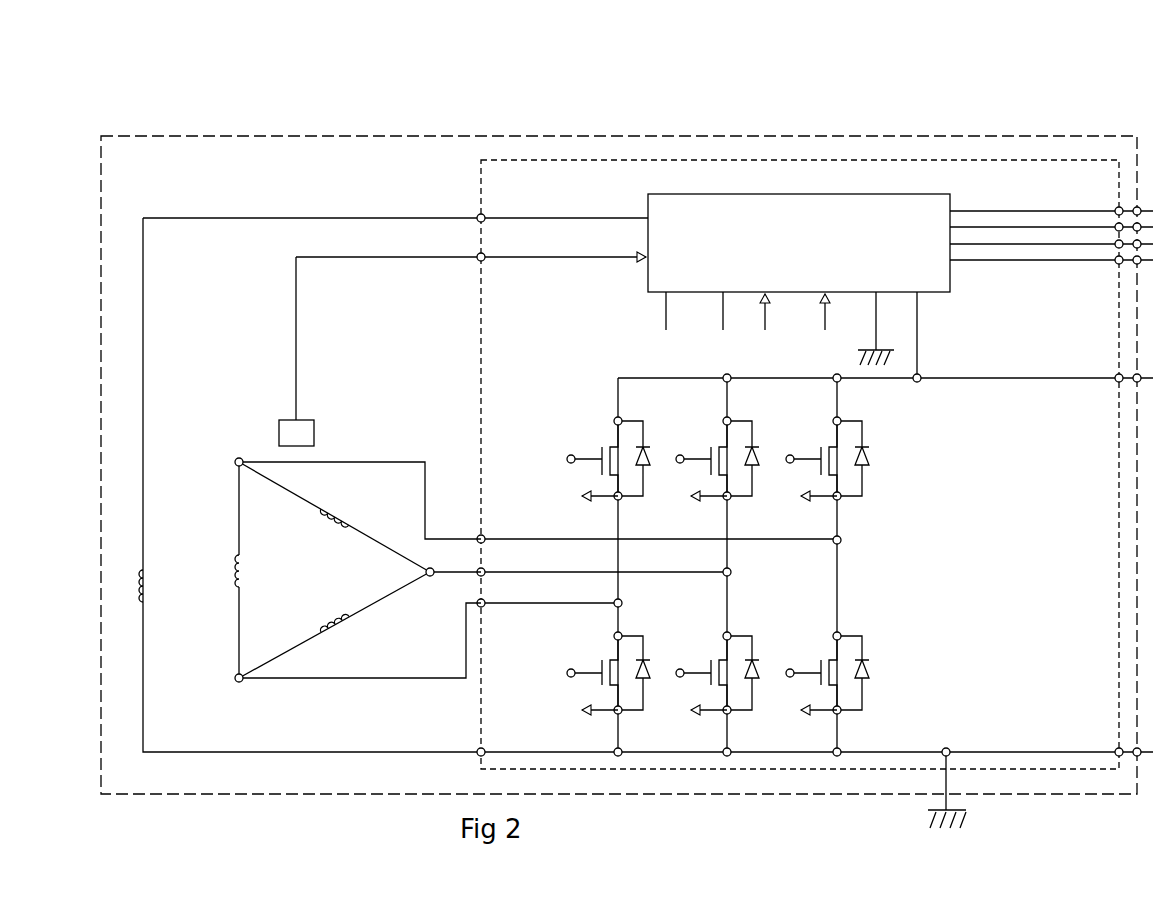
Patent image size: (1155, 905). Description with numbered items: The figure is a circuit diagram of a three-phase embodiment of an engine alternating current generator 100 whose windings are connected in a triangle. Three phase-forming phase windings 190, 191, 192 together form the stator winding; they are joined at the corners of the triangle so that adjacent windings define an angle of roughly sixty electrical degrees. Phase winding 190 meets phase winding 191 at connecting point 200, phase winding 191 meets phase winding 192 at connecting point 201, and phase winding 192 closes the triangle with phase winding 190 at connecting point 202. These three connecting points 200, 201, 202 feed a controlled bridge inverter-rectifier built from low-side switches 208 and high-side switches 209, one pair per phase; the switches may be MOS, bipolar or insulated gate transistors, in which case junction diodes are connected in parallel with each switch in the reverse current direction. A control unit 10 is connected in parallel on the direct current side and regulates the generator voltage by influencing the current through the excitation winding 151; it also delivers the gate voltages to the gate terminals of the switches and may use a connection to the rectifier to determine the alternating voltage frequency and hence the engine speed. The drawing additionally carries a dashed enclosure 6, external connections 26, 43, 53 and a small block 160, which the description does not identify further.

The alternating current generator 100 is at (903, 131).
The electronic control circuit module 6 is at (595, 157).
The control unit 10 is at (714, 205).
The signal line 26 is at (1019, 222).
The signal line 43 is at (1012, 239).
The signal line 53 is at (1014, 256).
The excitation winding 151 is at (139, 579).
The sensor 160 is at (300, 431).
The phase winding 190 is at (237, 554).
The phase winding 191 is at (347, 511).
The phase winding 192 is at (330, 616).
The connecting point 200 is at (237, 456).
The connecting point 201 is at (429, 580).
The connecting point 202 is at (236, 673).
The low-side switches 208 is at (669, 645).
The high-side switches 209 is at (654, 432).